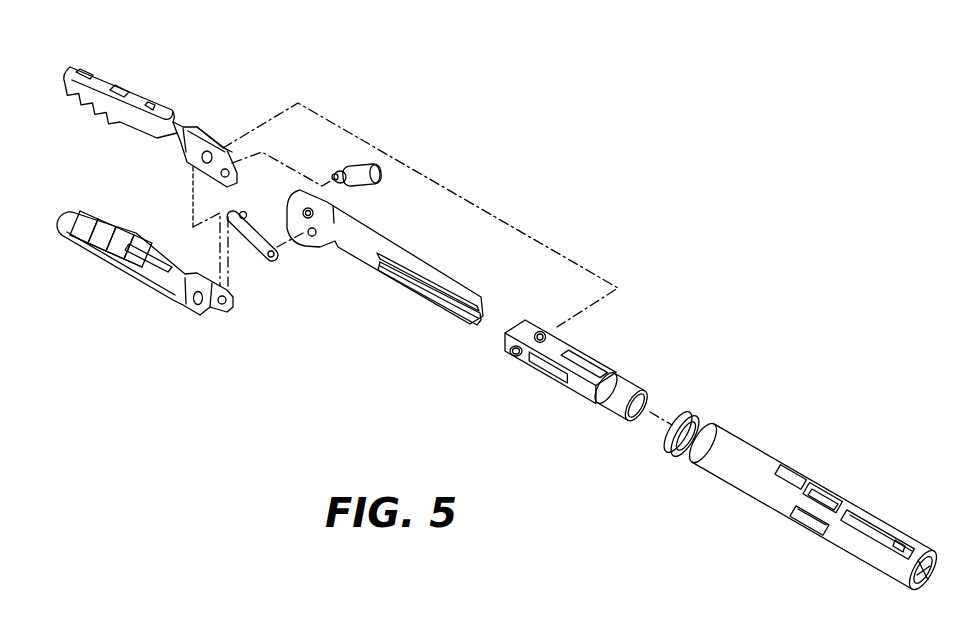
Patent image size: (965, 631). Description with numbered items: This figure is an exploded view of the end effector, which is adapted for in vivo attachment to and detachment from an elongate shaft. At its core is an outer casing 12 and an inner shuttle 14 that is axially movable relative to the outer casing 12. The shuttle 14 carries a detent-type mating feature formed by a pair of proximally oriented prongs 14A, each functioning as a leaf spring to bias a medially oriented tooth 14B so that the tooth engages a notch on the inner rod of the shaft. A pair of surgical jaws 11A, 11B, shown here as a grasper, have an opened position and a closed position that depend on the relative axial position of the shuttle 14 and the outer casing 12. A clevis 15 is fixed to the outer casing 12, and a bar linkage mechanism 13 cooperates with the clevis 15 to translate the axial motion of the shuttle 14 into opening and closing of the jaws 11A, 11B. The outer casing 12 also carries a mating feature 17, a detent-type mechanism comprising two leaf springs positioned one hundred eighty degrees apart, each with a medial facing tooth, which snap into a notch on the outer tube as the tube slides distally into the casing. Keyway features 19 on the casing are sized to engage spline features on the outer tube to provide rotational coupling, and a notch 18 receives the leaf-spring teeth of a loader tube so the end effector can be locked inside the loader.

The surgical jaw 11A is at (140, 92).
The surgical jaw 11B is at (130, 278).
The outer casing 12 is at (797, 503).
The bar linkage mechanism 13 is at (344, 112).
The inner shuttle 14 is at (367, 232).
The proximally oriented prong 14A is at (447, 283).
The medially oriented tooth 14B is at (433, 303).
The clevis 15 is at (607, 363).
The mating feature 17 is at (873, 525).
The notch 18 is at (702, 422).
The keyway feature 19 is at (820, 487).